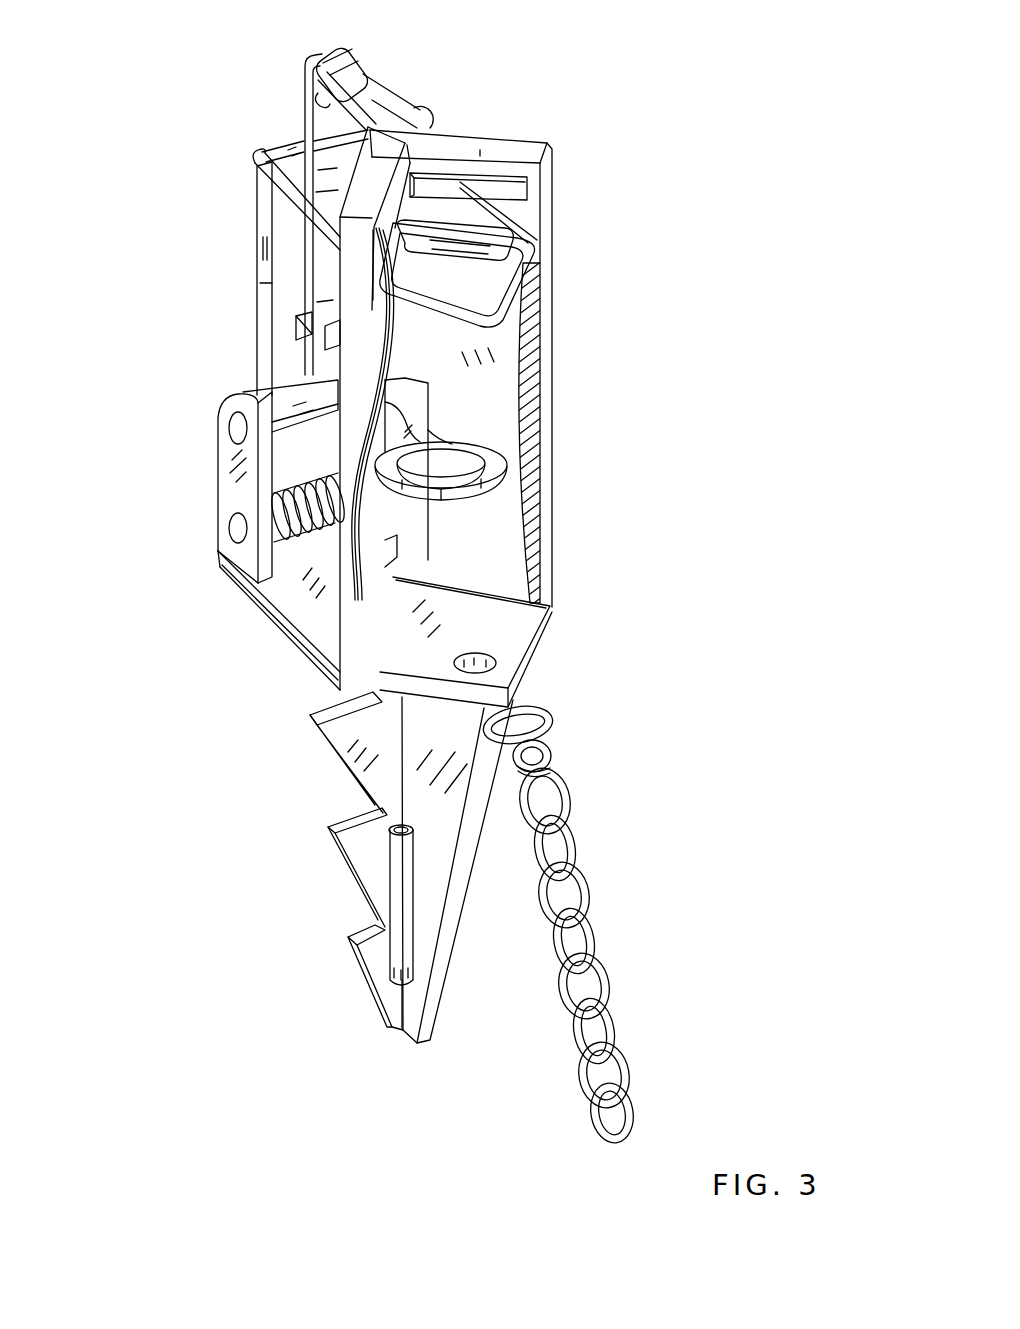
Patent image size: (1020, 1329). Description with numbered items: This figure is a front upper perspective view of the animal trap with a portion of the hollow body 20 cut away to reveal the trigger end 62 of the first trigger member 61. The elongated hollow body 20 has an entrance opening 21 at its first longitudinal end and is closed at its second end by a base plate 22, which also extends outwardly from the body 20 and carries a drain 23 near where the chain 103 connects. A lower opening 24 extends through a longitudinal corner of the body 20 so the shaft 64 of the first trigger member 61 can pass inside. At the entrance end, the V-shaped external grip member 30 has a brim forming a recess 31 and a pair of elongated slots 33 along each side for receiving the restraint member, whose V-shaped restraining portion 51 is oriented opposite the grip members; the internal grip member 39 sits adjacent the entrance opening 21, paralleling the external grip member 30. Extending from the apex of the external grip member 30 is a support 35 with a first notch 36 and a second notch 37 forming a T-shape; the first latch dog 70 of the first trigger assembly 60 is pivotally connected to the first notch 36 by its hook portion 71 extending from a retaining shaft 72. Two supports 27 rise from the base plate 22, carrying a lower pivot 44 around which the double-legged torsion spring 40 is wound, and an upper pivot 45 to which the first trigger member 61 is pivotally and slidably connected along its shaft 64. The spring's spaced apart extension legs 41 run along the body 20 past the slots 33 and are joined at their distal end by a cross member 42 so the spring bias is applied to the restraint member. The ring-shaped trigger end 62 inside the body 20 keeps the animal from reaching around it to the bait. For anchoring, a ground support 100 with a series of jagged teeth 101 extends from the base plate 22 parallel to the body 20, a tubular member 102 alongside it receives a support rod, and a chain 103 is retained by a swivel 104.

The hollow body 20 is at (540, 540).
The entrance opening 21 is at (335, 345).
The base plate 22 is at (515, 645).
The drain 23 is at (492, 664).
The lower opening 24 is at (335, 612).
The supports 27 is at (226, 479).
The external grip member 30 is at (533, 146).
The recess 31 is at (508, 185).
The elongated slots 33 is at (523, 217).
The support 35 is at (480, 128).
The first notch 36 is at (368, 74).
The second notch 37 is at (372, 104).
The internal grip member 39 is at (502, 250).
The torsion spring 40 is at (290, 522).
The extension legs 41 is at (257, 243).
The cross member 42 is at (262, 152).
The lower pivot 44 is at (232, 528).
The upper pivot 45 is at (277, 414).
The restraining portion 51 is at (520, 300).
The first trigger assembly 60 is at (295, 283).
The first trigger member 61 is at (458, 431).
The trigger end 62 is at (505, 455).
The shaft 64 is at (388, 402).
The first latch dog 70 is at (300, 113).
The hook portion 71 is at (353, 50).
The retaining shaft 72 is at (320, 248).
The ground support 100 is at (448, 962).
The jagged teeth 101 is at (342, 823).
The tubular member 102 is at (402, 888).
The chain 103 is at (606, 996).
The swivel 104 is at (563, 764).